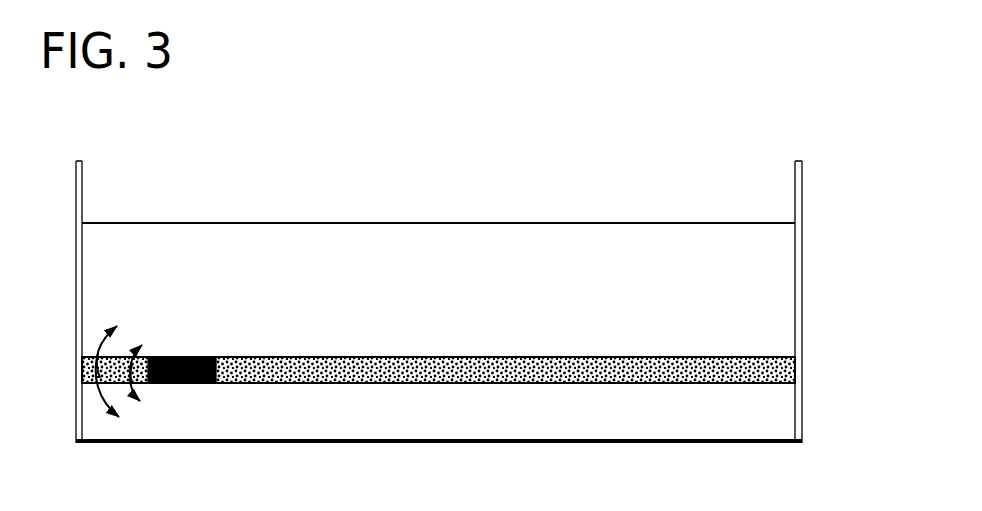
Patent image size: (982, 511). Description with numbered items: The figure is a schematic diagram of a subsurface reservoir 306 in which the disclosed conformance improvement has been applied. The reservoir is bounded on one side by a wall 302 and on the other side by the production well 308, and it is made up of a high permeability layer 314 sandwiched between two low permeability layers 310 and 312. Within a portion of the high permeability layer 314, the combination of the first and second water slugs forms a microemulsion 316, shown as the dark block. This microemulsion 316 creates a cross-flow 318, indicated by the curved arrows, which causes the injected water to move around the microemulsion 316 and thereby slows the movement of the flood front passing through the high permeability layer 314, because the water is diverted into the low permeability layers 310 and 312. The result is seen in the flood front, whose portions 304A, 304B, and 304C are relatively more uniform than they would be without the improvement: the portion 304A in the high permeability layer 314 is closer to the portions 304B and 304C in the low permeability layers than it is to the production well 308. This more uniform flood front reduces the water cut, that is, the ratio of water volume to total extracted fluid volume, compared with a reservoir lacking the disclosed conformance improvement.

The first side wall of container 302 is at (76, 158).
The portion of flood front 304A is at (468, 367).
The portion of flood front 304B is at (280, 344).
The portion of flood front 304C is at (413, 418).
The reservoir 306 is at (500, 189).
The production well 308 is at (797, 159).
The low permeability layer 310 is at (397, 258).
The low permeability layer 312 is at (757, 426).
The high permeability layer 314 is at (667, 359).
The microemulsion 316 is at (193, 383).
The cross-flow 318 is at (98, 388).